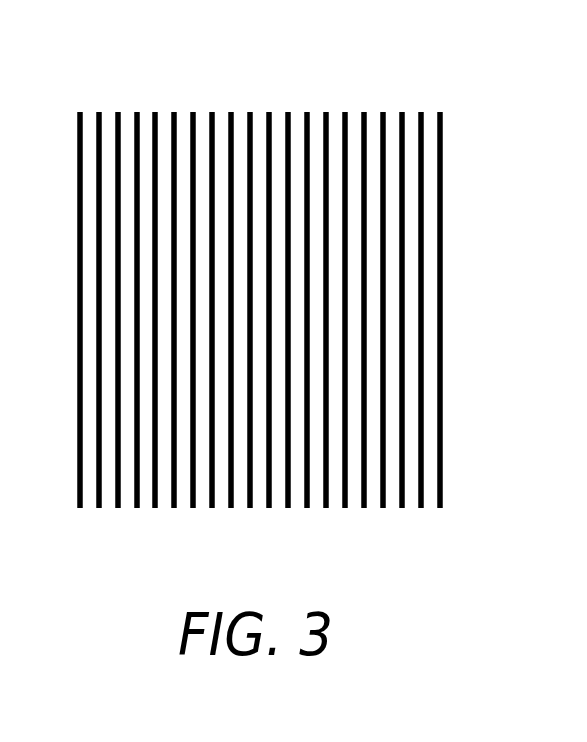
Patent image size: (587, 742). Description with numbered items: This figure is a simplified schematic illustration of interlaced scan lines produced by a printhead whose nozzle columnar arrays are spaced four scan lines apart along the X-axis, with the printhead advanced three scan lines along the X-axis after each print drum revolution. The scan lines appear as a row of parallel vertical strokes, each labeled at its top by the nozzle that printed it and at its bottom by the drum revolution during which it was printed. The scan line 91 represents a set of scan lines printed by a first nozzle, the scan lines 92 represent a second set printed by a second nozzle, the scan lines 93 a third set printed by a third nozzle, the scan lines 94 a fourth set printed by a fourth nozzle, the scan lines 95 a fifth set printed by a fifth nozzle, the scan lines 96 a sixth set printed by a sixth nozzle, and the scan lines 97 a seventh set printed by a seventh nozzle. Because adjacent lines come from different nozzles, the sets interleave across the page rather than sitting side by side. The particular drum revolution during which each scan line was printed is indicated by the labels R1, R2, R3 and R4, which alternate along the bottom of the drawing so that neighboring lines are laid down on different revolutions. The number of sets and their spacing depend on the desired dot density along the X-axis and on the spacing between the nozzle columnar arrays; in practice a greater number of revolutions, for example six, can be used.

The scan line 91 is at (119, 282).
The scan lines 92 is at (138, 266).
The scan lines 93 is at (192, 266).
The scan lines 94 is at (267, 266).
The scan lines 95 is at (343, 266).
The scan lines 96 is at (398, 266).
The scan lines 97 is at (417, 266).
The drum revolution indicator R1 is at (266, 355).
The drum revolution indicator R2 is at (231, 340).
The drum revolution indicator R3 is at (304, 355).
The drum revolution indicator R4 is at (269, 340).